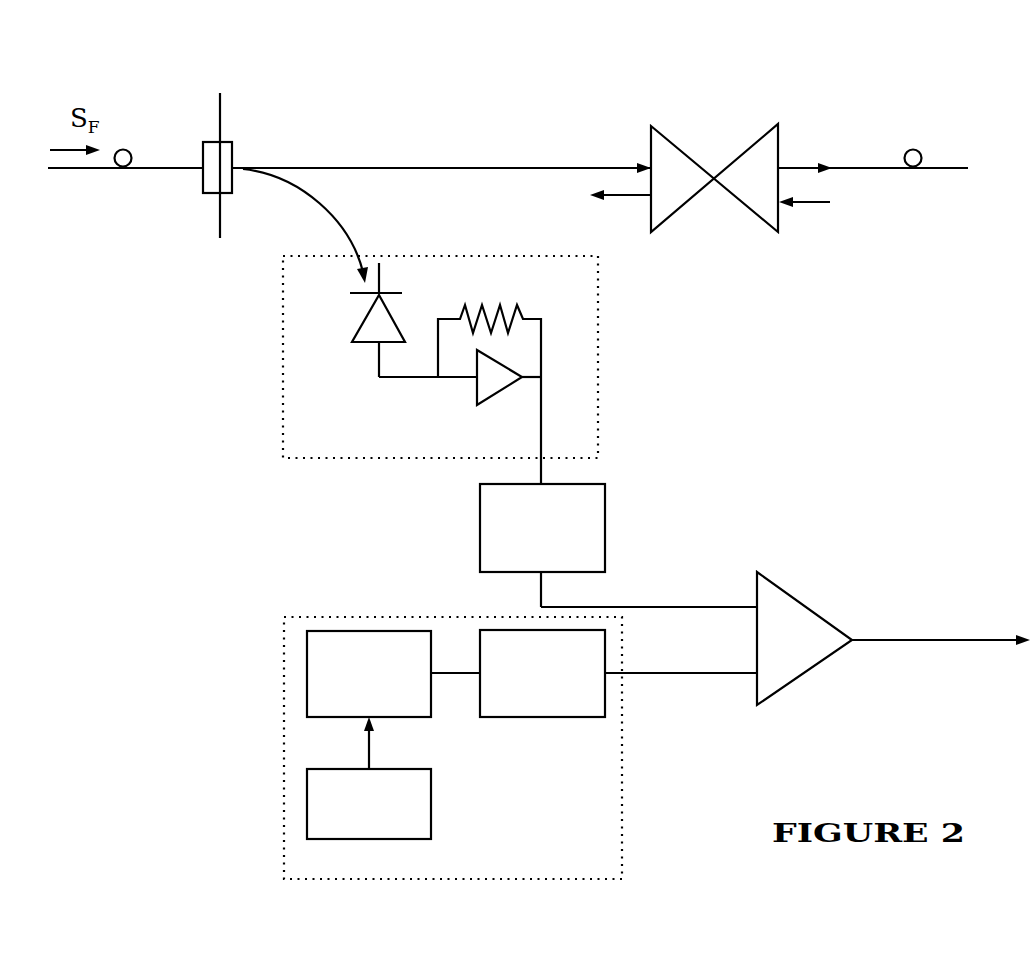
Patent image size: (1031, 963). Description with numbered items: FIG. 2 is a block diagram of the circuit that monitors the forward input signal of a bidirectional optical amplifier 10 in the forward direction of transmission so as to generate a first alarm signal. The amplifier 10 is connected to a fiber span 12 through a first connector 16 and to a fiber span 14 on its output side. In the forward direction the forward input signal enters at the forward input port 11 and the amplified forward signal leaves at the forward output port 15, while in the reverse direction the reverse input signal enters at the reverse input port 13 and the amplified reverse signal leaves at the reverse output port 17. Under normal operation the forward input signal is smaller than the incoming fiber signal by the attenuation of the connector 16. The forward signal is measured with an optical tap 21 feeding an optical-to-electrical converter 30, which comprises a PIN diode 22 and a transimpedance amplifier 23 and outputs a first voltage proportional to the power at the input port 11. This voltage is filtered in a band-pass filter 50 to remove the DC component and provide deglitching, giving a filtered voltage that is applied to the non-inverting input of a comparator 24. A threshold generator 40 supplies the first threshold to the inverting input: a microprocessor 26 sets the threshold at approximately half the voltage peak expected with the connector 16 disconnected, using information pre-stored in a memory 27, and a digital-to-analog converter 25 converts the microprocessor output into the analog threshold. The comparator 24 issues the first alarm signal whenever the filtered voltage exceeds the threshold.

The bidirectional amplifier 10 is at (678, 148).
The input port 11 is at (651, 165).
The fiber span 12 is at (535, 168).
The input port 13 is at (783, 203).
The fiber span 14 is at (893, 170).
The output port 15 is at (780, 165).
The first connector 16 is at (217, 115).
The output port 17 is at (651, 195).
The optical tap 21 is at (257, 168).
The PIN diode 22 is at (357, 322).
The transimpedance amplifier 23 is at (477, 390).
The comparator 24 is at (812, 607).
The digital-to-analog converter 25 is at (522, 717).
The microprocessor 26 is at (307, 680).
The memory 27 is at (348, 839).
The optical-to-electrical converter 30 is at (283, 305).
The threshold generator 40 is at (284, 765).
The band-pass filter 50 is at (478, 510).